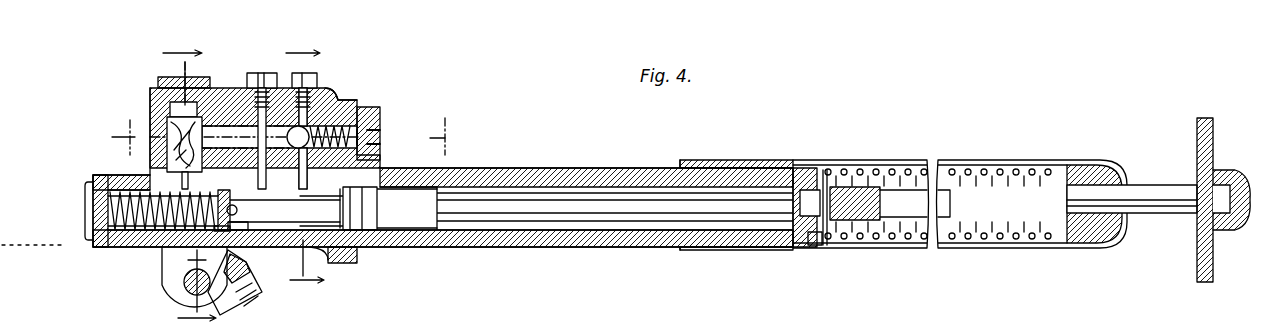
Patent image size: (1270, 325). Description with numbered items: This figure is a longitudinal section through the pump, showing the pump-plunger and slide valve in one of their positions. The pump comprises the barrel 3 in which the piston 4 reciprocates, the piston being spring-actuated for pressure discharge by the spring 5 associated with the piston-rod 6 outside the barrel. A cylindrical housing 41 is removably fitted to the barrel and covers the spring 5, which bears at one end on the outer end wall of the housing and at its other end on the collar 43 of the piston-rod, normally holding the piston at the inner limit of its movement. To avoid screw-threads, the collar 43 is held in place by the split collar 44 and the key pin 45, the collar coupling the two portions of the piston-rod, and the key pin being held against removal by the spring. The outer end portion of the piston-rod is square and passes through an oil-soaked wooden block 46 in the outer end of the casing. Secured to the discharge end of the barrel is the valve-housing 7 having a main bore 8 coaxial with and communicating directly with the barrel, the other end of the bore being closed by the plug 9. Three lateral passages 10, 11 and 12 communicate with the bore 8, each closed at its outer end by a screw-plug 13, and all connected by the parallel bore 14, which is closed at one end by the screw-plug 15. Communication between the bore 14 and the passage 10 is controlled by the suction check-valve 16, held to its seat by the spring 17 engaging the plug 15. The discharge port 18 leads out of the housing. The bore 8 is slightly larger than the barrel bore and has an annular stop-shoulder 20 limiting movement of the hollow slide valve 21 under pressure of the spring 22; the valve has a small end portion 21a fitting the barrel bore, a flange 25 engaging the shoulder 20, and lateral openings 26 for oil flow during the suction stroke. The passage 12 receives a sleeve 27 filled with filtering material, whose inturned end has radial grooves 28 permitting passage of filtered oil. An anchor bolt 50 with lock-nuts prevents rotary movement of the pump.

The pump barrel 3 is at (545, 166).
The piston 4 is at (378, 247).
The spring 5 is at (902, 245).
The piston-rod 6 is at (1143, 215).
The valve-housing 7 is at (296, 232).
The main bore 8 is at (290, 286).
The plug 9 is at (86, 238).
The lateral passage 10 is at (398, 160).
The lateral passage 11 is at (260, 82).
The lateral passage 12 is at (182, 180).
The screw-plug 13 is at (200, 76).
The bore 14 is at (228, 88).
The screw-plug 15 is at (384, 122).
The check-valve 16 is at (305, 127).
The spring 17 is at (340, 102).
The discharge port 18 is at (222, 233).
The annular stop-shoulder 20 is at (330, 249).
The slide valve 21 is at (215, 232).
The small end portion 21a is at (330, 250).
The spring 22 is at (160, 234).
The flange 25 is at (240, 232).
The lateral openings 26 is at (237, 210).
The sleeve 27 is at (168, 112).
The radial grooves 28 is at (170, 120).
The cylindrical housing 41 is at (778, 152).
The collar 43 is at (800, 168).
The split collar 44 is at (810, 245).
The key pin 45 is at (826, 246).
The block 46 is at (1078, 244).
The anchor bolt 50 is at (190, 288).